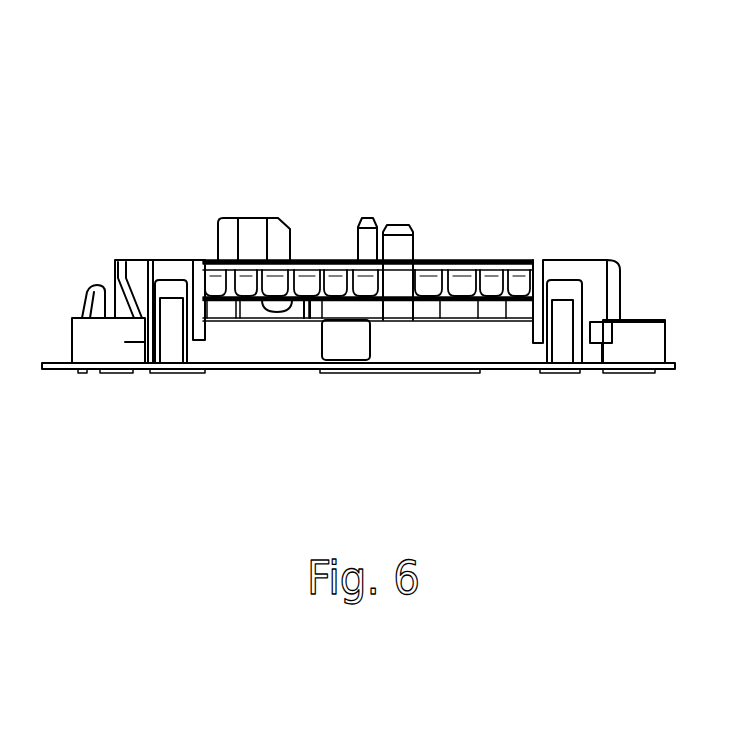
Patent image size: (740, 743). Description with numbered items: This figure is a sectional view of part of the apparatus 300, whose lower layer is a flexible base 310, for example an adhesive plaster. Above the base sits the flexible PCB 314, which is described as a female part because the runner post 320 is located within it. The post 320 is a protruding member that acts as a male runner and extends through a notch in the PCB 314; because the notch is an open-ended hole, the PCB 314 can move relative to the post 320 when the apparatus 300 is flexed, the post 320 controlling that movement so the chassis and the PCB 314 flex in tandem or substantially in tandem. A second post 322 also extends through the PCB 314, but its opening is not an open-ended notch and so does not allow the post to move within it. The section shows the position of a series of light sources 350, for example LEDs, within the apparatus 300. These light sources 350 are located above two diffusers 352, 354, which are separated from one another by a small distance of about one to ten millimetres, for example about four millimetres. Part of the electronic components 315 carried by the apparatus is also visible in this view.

The apparatus 300 is at (518, 120).
The flexible base 310 is at (116, 372).
The flexible PCB 314 is at (487, 259).
The electronic components 315 is at (263, 224).
The post 320 is at (397, 225).
The second post 322 is at (366, 217).
The light sources 350 is at (483, 288).
The diffuser 352 is at (222, 322).
The diffuser 354 is at (318, 300).